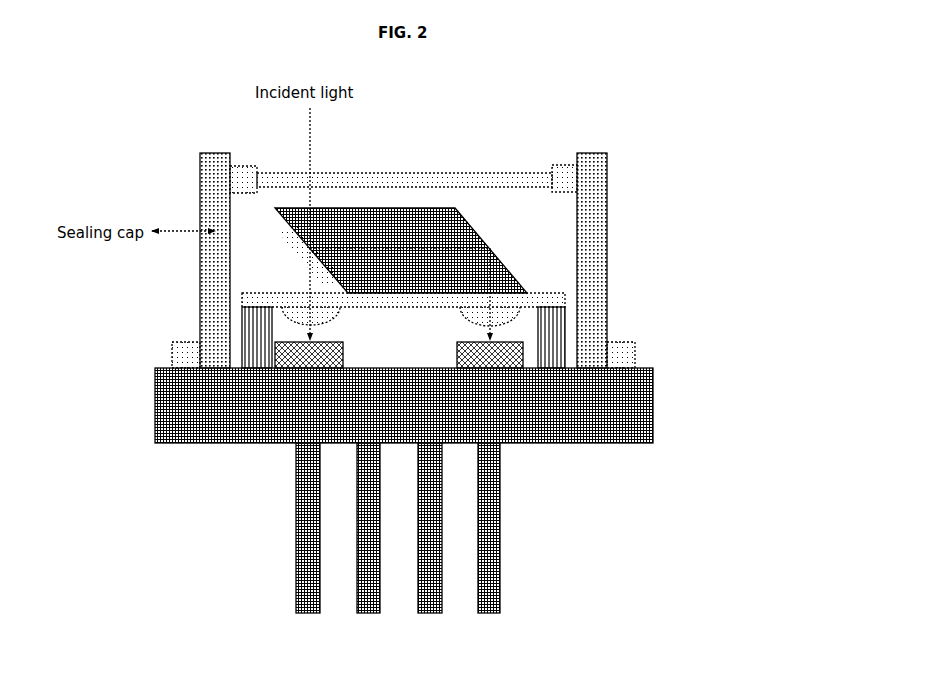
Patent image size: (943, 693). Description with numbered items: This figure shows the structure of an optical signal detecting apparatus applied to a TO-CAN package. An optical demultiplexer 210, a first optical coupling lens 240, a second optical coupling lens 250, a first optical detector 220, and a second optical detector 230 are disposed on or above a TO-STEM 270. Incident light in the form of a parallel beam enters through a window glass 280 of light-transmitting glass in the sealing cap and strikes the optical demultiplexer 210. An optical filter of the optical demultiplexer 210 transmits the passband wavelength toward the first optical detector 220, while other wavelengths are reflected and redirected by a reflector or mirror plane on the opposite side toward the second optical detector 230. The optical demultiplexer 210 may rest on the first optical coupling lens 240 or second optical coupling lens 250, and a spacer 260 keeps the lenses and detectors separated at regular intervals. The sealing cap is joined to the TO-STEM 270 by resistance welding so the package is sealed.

The optical demultiplexer 210 is at (460, 234).
The first optical detector 220 is at (310, 352).
The second optical detector 230 is at (490, 352).
The first optical coupling lens 240 is at (303, 315).
The second optical coupling lens 250 is at (503, 317).
The spacer 260 is at (555, 330).
The TO-STEM 270 is at (192, 406).
The window glass 280 is at (435, 180).